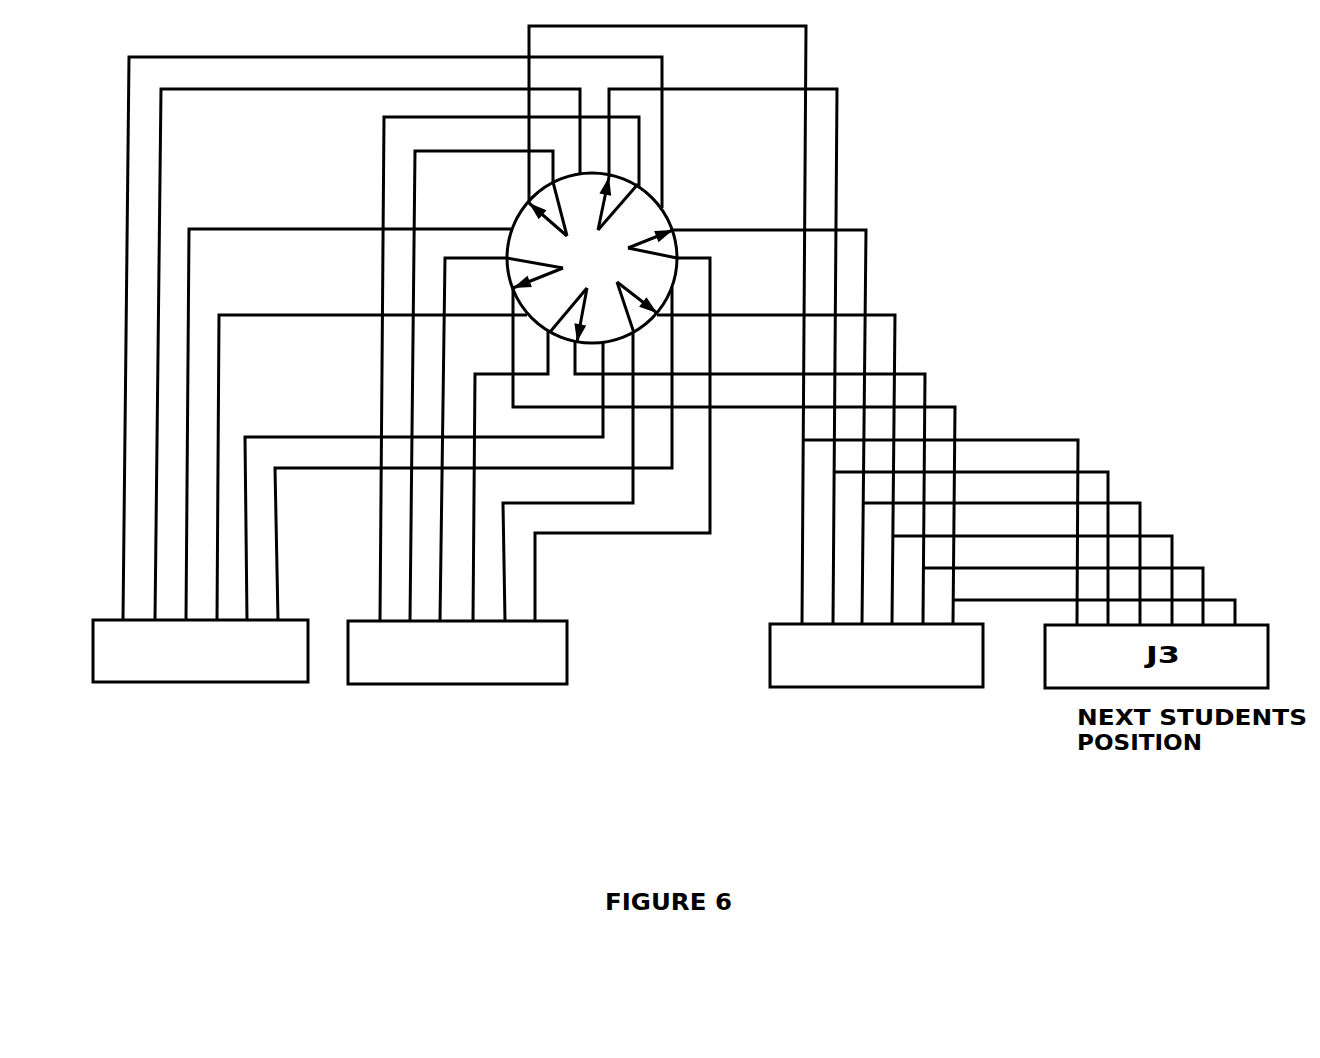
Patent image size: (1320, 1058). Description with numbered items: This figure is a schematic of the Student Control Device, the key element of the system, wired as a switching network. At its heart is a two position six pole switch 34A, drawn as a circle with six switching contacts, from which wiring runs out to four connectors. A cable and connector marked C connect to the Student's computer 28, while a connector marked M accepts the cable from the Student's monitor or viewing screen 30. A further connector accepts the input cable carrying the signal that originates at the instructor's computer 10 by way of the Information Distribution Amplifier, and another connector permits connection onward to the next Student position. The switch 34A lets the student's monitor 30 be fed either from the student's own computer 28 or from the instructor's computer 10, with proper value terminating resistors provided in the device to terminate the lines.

The two position six pole switch 34A is at (668, 220).
The student's computer 28 is at (206, 685).
The student's monitor or viewing screen 30 is at (474, 686).
The instructor's computer 10 is at (877, 701).